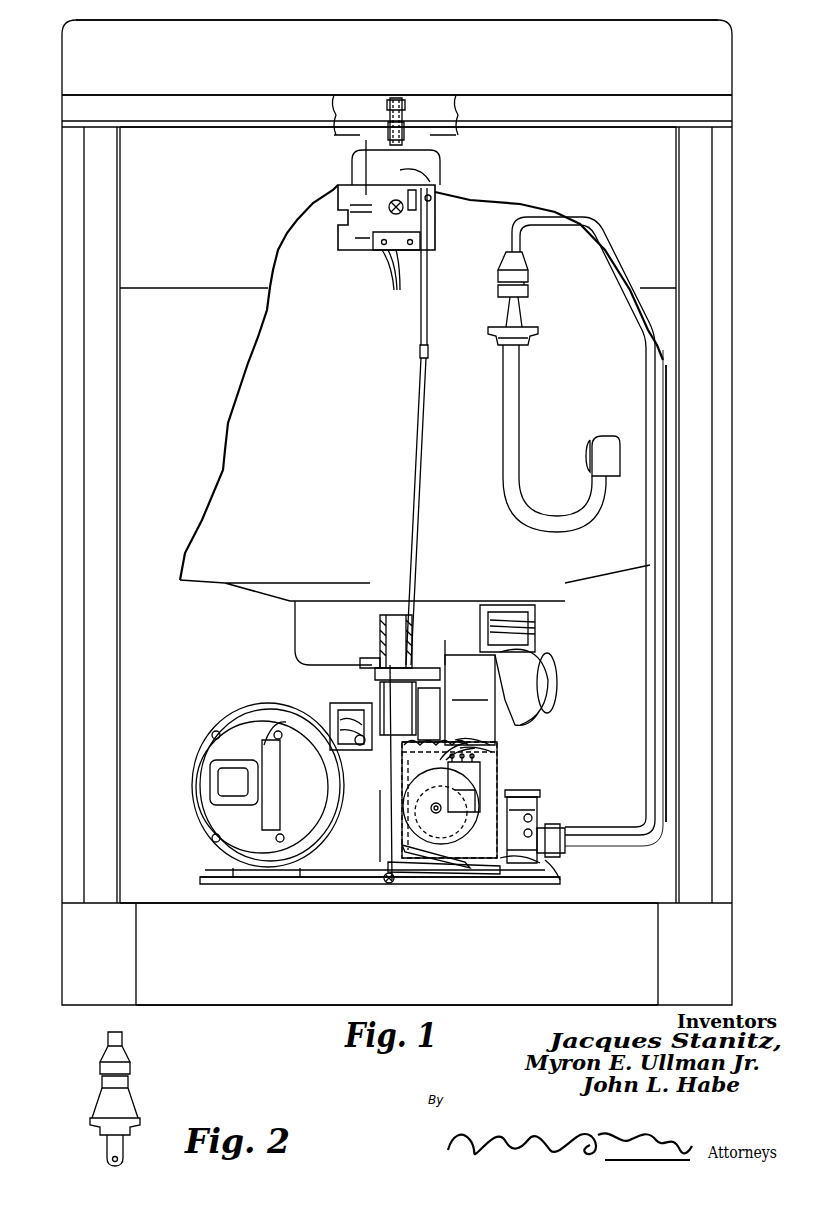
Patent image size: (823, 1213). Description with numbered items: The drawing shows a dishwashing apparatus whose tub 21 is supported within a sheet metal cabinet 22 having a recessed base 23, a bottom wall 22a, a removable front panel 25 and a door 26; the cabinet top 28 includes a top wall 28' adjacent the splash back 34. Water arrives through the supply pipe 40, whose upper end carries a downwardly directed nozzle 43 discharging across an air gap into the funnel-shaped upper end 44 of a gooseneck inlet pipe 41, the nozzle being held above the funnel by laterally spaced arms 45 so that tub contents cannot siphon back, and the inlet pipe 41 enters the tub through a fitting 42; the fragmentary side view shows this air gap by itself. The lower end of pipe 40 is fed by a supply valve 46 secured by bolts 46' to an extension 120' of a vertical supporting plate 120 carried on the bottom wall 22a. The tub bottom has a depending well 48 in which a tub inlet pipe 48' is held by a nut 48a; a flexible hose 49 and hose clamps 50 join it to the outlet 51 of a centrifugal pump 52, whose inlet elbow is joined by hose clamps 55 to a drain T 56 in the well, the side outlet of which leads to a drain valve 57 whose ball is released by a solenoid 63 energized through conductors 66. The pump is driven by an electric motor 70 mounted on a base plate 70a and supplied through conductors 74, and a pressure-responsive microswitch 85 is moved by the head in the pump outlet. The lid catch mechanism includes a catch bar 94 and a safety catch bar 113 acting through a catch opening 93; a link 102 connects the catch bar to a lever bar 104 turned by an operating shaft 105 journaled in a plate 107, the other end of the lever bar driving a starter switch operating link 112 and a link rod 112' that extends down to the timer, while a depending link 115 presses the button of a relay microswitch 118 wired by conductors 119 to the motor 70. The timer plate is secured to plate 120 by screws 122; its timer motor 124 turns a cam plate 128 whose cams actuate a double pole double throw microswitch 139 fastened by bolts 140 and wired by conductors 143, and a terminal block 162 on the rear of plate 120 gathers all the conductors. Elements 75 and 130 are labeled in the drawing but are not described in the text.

In FIG. 1, the tub 21 is at (612, 576).
In FIG. 1, the cabinet 22 is at (58, 754).
In FIG. 1, the bottom wall of the cabinet 22a is at (272, 906).
In FIG. 1, the recessed base 23 is at (397, 974).
In FIG. 1, the removable panel 25 is at (398, 168).
In FIG. 1, the door 26 is at (222, 418).
In FIG. 1, the cabinet top 28 is at (397, 73).
In FIG. 1, the top wall 28' is at (406, 93).
In FIG. 1, the splash back 34 is at (397, 39).
In FIG. 1, the water supply pipe 40 is at (646, 716).
In FIG. 2, the water supply pipe 40 is at (124, 1032).
In FIG. 1, the gooseneck inlet pipe 41 is at (521, 416).
In FIG. 2, the gooseneck inlet pipe 41 is at (104, 1148).
In FIG. 1, the fitting 42 is at (610, 434).
In FIG. 1, the nozzle 43 is at (530, 294).
In FIG. 2, the nozzle 43 is at (128, 1082).
In FIG. 1, the funnel-shaped upper end 44 is at (535, 338).
In FIG. 2, the funnel-shaped upper end 44 is at (96, 1128).
In FIG. 1, the laterally spaced arms 45 is at (524, 312).
In FIG. 2, the laterally spaced arms 45 is at (96, 1100).
In FIG. 1, the supply valve 46 is at (551, 824).
In FIG. 1, the bolts 46' is at (568, 832).
In FIG. 1, the well 48 is at (331, 633).
In FIG. 1, the nut 48a is at (364, 656).
In FIG. 1, the tub inlet pipe 48' is at (420, 640).
In FIG. 1, the flexible hose 49 is at (376, 672).
In FIG. 1, the hose clamps 50 is at (414, 712).
In FIG. 1, the pump outlet 51 is at (440, 722).
In FIG. 1, the centrifugal pump 52 is at (432, 742).
In FIG. 1, the hose clamps 55 is at (493, 746).
In FIG. 1, the tub outlet drain T 56 is at (470, 684).
In FIG. 1, the drain valve 57 is at (528, 660).
In FIG. 1, the solenoid 63 is at (537, 612).
In FIG. 1, the electrical conductors 66 is at (537, 630).
In FIG. 1, the electric motor 70 is at (210, 714).
In FIG. 1, the base plate 70a is at (212, 862).
In FIG. 1, the electrical conductors 74 is at (266, 720).
In FIG. 1, the terminal 75 is at (362, 748).
In FIG. 1, the microswitch 85 is at (342, 706).
In FIG. 1, the catch opening 93 is at (405, 105).
In FIG. 1, the catch bar 94 is at (405, 127).
In FIG. 1, the link 102 is at (416, 192).
In FIG. 1, the lever bar 104 is at (431, 198).
In FIG. 1, the operating shaft 105 is at (403, 209).
In FIG. 1, the plate 107 is at (338, 243).
In FIG. 1, the starter switch operating link 112 is at (392, 273).
In FIG. 1, the link rod 112' is at (383, 619).
In FIG. 1, the safety catch bar 113 is at (390, 118).
In FIG. 1, the depending link 115 is at (352, 152).
In FIG. 1, the microswitch 118 is at (378, 252).
In FIG. 1, the conductors 119 is at (393, 280).
In FIG. 1, the supporting plate 120 is at (473, 800).
In FIG. 1, the extension 120' is at (542, 880).
In FIG. 1, the screws 122 is at (387, 884).
In FIG. 1, the timer motor 124 is at (420, 884).
In FIG. 1, the cam plate 128 is at (402, 800).
In FIG. 1, the valve actuator 130 is at (526, 800).
In FIG. 1, the microswitch 139 is at (483, 782).
In FIG. 1, the bolts 140 is at (446, 776).
In FIG. 1, the conductors 143 is at (490, 756).
In FIG. 1, the terminal block 162 is at (452, 740).